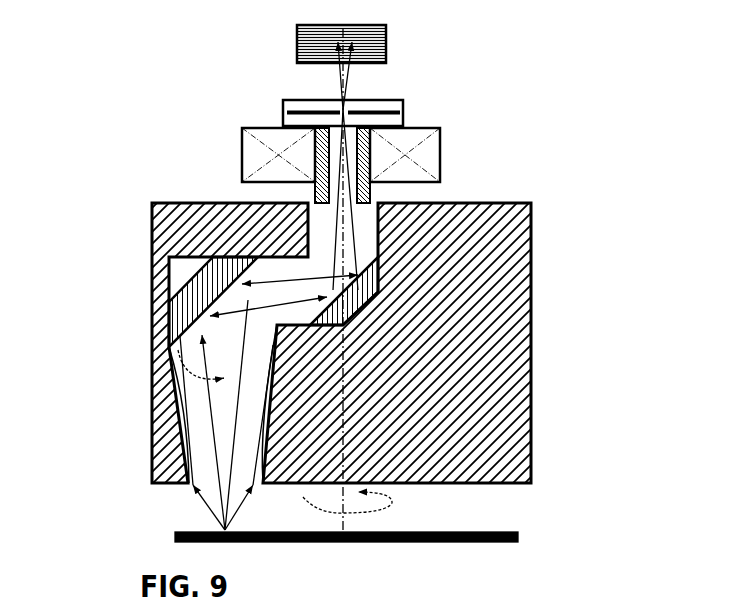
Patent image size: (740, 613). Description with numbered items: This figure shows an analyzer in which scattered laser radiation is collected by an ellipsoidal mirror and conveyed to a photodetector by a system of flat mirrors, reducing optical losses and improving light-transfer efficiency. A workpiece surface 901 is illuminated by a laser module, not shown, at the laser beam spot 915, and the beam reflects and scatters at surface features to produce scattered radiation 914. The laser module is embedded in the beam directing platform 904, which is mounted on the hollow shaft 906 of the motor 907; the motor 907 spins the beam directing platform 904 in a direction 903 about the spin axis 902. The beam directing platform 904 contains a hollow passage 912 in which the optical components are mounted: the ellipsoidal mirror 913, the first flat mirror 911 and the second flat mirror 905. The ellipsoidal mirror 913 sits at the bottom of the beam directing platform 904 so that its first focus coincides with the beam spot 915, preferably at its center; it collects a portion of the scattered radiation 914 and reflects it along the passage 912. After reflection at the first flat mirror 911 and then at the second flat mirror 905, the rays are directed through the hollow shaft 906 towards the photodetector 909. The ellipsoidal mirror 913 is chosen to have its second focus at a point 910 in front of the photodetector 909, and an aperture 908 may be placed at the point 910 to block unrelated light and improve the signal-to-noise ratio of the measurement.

The workpiece surface 901 is at (519, 531).
The spin axis 902 is at (348, 525).
The direction 903 is at (395, 503).
The beam directing platform 904 is at (176, 228).
The second flat mirror 905 is at (396, 352).
The hollow shaft 906 is at (376, 193).
The motor 907 is at (445, 155).
The aperture 908 is at (408, 112).
The photodetector 909 is at (391, 43).
The point 910 is at (335, 103).
The first flat mirror 911 is at (190, 285).
The hollow passage 912 is at (170, 333).
The ellipsoidal mirror 913 is at (272, 415).
The scattered radiation 914 is at (185, 473).
The laser beam spot 915 is at (222, 528).